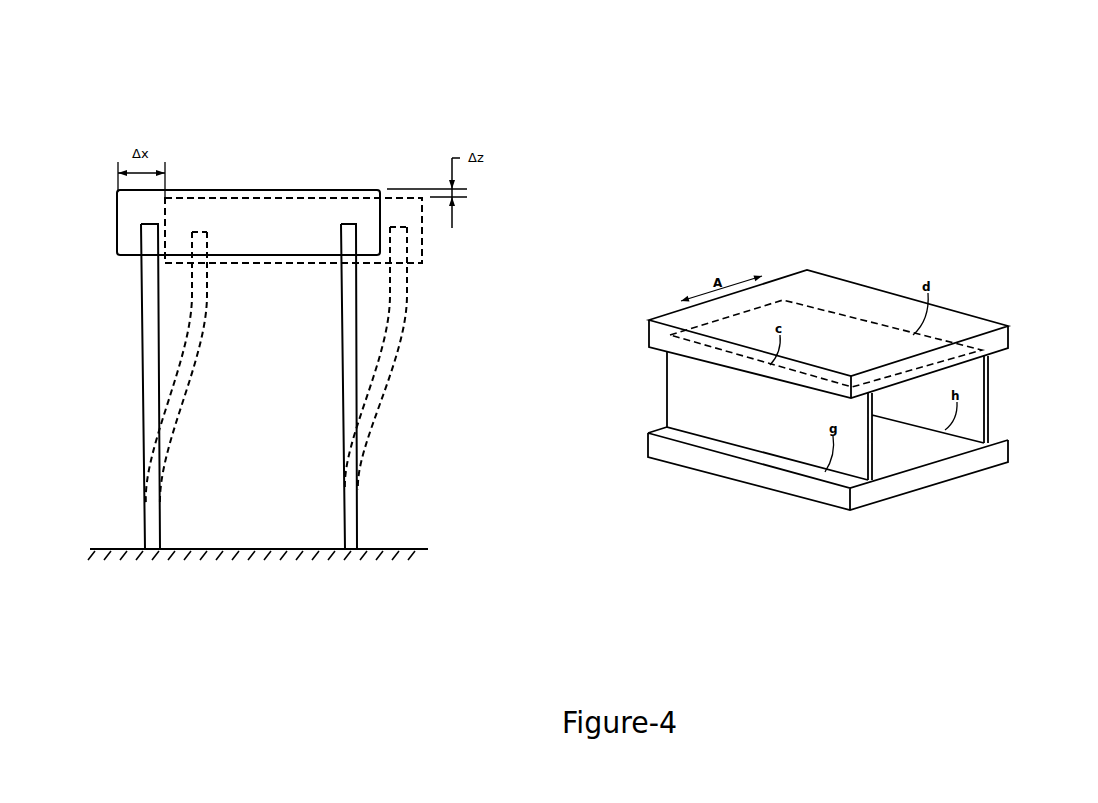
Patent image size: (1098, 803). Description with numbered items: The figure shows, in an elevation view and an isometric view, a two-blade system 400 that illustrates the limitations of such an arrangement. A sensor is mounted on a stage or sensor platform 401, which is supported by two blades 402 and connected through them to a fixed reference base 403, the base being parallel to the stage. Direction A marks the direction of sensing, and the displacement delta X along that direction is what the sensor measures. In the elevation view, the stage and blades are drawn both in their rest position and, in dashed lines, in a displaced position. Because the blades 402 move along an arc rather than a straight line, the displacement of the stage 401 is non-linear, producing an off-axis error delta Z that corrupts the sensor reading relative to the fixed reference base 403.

The system 400 is at (80, 37).
The stage or sensor platform 401 is at (892, 272).
The blades 402 is at (1023, 407).
The fixed reference base 403 is at (957, 502).